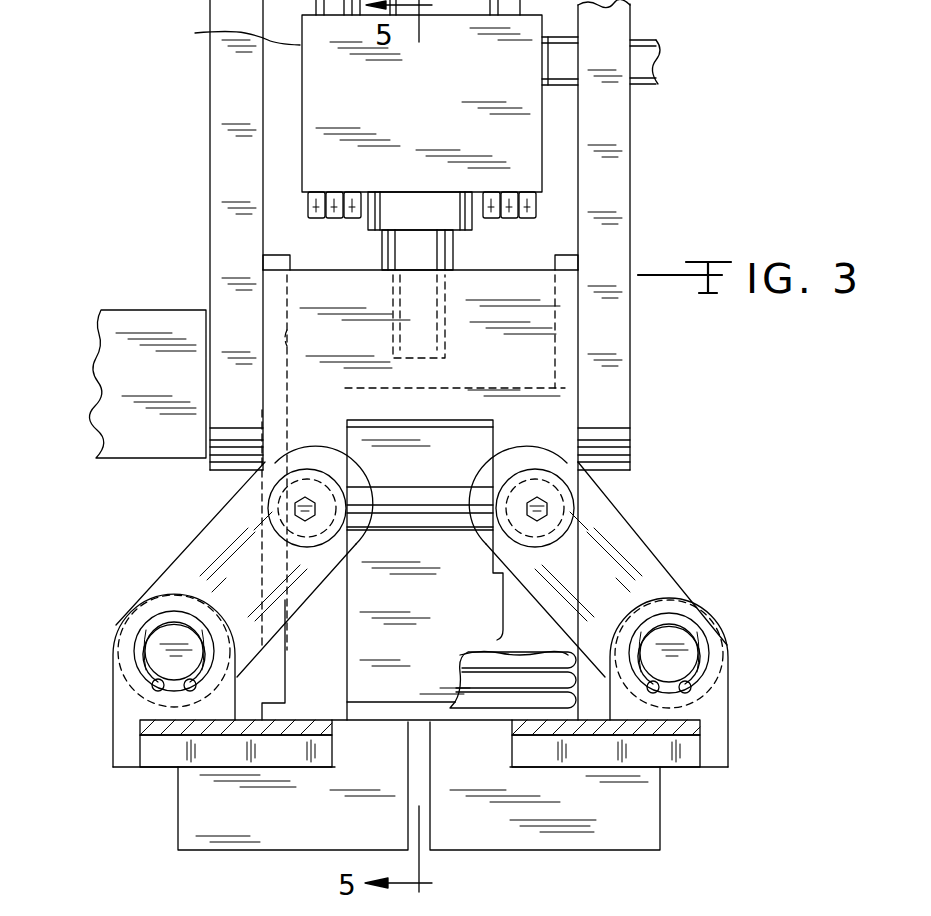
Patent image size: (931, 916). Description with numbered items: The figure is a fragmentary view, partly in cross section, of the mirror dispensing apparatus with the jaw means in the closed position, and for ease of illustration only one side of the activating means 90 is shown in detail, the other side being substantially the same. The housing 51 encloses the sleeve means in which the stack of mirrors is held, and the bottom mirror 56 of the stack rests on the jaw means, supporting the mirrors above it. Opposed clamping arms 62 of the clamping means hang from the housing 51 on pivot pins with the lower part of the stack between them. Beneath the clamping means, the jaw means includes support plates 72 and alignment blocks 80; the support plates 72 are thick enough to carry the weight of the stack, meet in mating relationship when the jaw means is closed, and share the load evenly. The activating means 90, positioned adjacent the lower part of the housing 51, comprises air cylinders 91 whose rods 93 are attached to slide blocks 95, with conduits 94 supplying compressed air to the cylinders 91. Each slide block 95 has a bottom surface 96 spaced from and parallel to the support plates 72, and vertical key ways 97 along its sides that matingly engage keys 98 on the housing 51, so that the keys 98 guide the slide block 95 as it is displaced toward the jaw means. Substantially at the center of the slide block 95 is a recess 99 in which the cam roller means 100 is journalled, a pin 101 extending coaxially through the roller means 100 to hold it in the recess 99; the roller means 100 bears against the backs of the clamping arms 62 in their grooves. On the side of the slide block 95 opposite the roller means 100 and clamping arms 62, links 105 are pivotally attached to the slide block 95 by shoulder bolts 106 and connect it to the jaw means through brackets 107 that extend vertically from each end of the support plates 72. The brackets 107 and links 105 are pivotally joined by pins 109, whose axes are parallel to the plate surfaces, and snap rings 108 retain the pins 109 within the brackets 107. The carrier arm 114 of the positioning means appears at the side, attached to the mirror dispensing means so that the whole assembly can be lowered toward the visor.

The housing 51 is at (208, 92).
The bottom mirror 56 is at (486, 722).
The clamping arm 62 is at (452, 590).
The support plate 72 is at (158, 748).
The alignment block 80 is at (200, 812).
The activating means 90 is at (198, 148).
The cylinder 91 is at (229, 35).
The cylinder rod 93 is at (452, 255).
The conduit 94 is at (545, 60).
The slide block 95 is at (505, 308).
The bottom surface 96 is at (472, 652).
The key way 97 is at (290, 328).
The key 98 is at (262, 260).
The recess 99 is at (375, 390).
The cam roller means 100 is at (448, 476).
The pin 101 is at (565, 388).
The link 105 is at (232, 552).
The shoulder bolt 106 is at (275, 500).
The bracket 107 is at (125, 716).
The snap ring 108 is at (729, 646).
The pin 109 is at (672, 652).
The carrier arm 114 is at (132, 318).